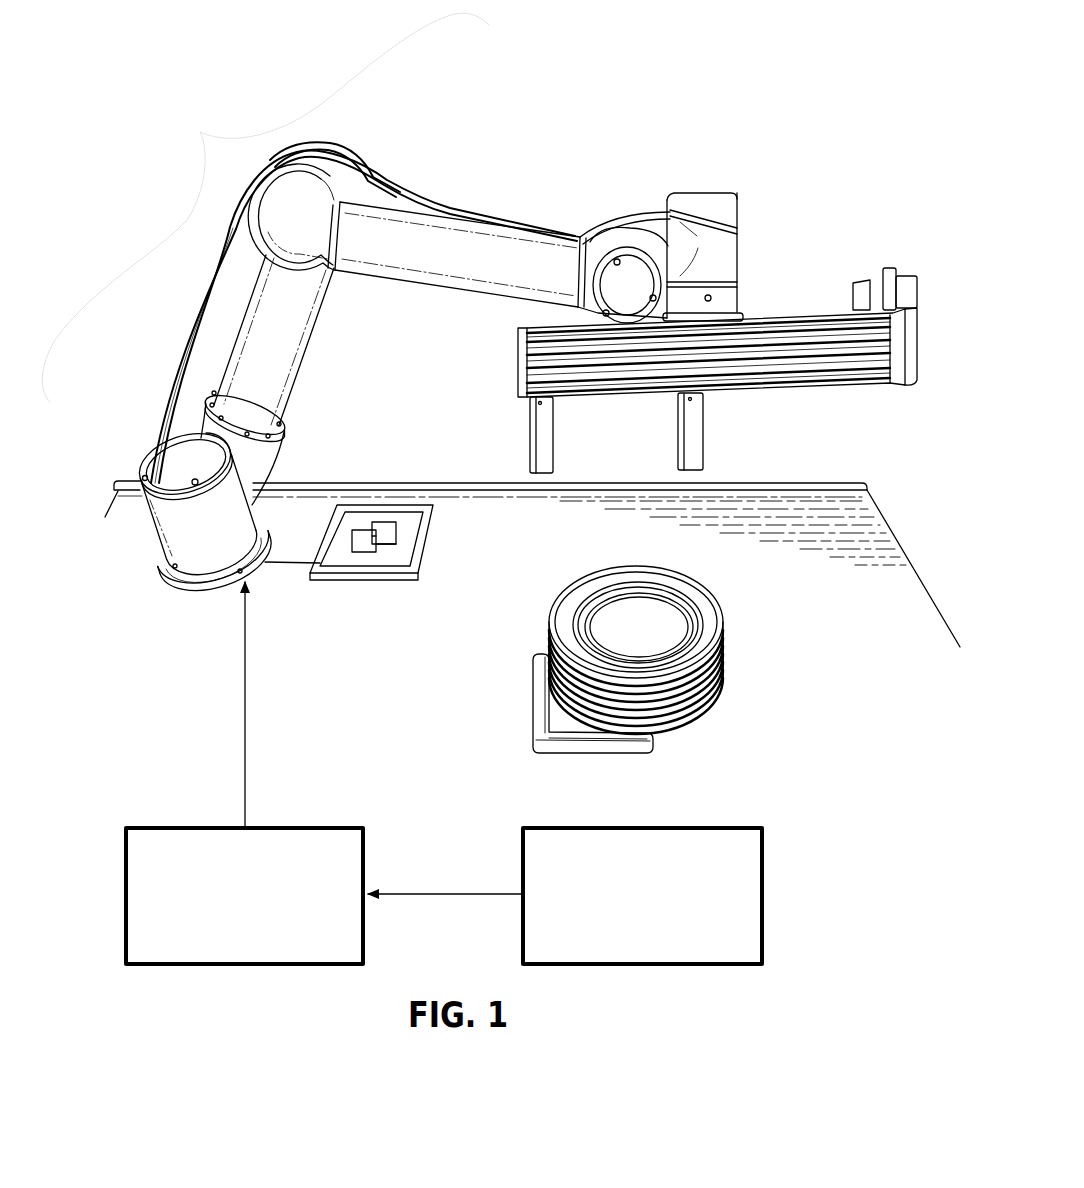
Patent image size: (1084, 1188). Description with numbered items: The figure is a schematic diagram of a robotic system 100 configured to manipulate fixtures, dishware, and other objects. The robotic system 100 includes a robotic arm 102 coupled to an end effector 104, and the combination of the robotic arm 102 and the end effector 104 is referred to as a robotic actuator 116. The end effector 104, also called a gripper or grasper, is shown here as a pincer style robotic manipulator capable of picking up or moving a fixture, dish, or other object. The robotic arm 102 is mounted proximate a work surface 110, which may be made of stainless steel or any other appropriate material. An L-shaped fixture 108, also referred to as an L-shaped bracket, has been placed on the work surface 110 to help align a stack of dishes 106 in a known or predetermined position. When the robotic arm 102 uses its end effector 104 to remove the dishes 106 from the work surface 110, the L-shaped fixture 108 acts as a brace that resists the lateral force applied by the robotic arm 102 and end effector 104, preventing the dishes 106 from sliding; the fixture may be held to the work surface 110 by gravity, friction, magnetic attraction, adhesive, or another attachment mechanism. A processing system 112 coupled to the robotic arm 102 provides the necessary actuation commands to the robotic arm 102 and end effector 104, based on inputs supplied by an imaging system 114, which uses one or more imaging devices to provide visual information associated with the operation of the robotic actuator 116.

The robotic system 100 is at (643, 79).
The robotic arm 102 is at (241, 326).
The end effector 104 is at (808, 309).
The stack of dishes 106 is at (728, 625).
The L-shaped fixture 108 is at (530, 695).
The work surface 110 is at (734, 512).
The processing system 112 is at (226, 932).
The imaging system 114 is at (624, 932).
The robotic actuator 116 is at (265, 207).